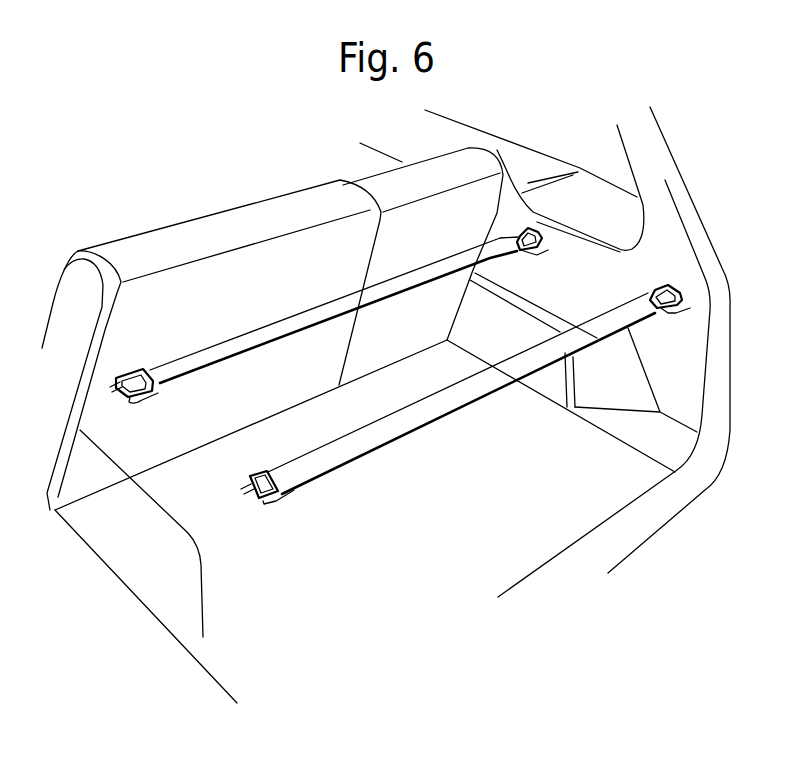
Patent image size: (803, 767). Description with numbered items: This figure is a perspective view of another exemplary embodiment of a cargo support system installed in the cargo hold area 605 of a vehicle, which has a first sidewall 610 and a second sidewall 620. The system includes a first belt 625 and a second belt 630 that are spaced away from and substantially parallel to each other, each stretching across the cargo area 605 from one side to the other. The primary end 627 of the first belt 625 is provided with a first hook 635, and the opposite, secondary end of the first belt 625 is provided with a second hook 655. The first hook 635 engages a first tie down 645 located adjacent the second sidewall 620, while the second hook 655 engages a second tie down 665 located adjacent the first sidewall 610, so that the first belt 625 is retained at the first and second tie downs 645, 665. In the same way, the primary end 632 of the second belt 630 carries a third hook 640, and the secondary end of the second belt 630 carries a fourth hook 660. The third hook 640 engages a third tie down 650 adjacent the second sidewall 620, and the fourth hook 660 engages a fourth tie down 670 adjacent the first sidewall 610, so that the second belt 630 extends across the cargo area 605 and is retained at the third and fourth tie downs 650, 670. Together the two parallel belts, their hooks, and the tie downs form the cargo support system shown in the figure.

The cargo hold area 605 is at (449, 536).
The first sidewall 610 is at (504, 332).
The second sidewall 620 is at (138, 536).
The first belt 625 is at (293, 315).
The primary end of the first belt 627 is at (352, 326).
The second belt 630 is at (386, 430).
The primary end of the second belt 632 is at (427, 400).
The first hook 635 is at (157, 390).
The third hook 640 is at (285, 500).
The first tie down 645 is at (134, 402).
The third tie down 650 is at (268, 508).
The second hook 655 is at (514, 231).
The fourth hook 660 is at (654, 289).
The second tie down 665 is at (538, 248).
The fourth tie down 670 is at (692, 312).